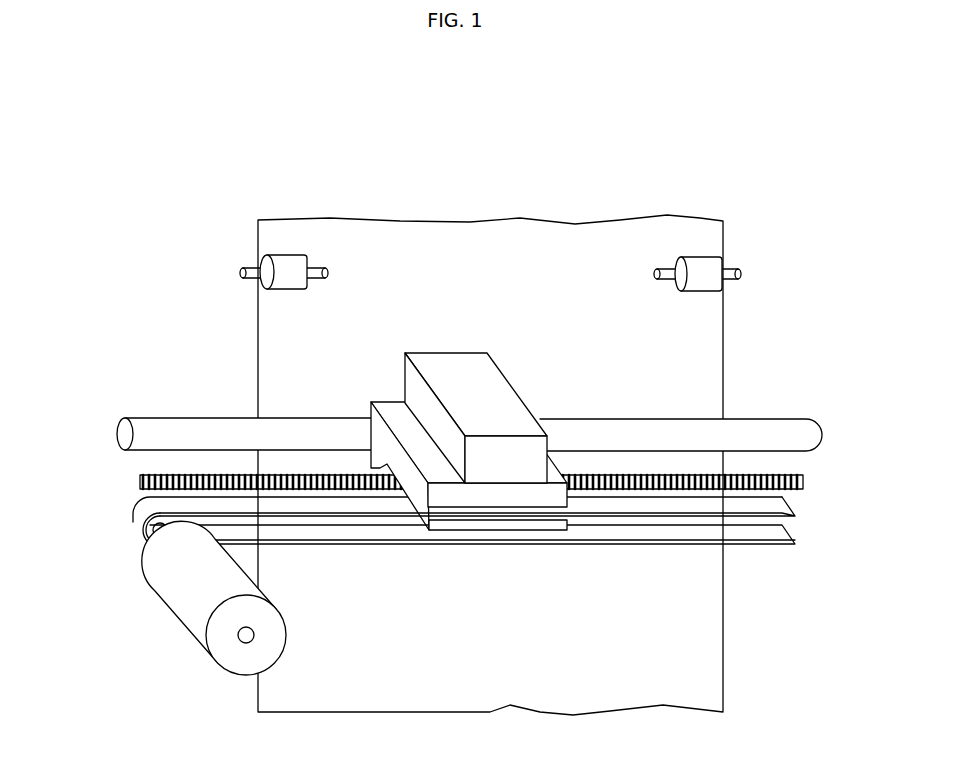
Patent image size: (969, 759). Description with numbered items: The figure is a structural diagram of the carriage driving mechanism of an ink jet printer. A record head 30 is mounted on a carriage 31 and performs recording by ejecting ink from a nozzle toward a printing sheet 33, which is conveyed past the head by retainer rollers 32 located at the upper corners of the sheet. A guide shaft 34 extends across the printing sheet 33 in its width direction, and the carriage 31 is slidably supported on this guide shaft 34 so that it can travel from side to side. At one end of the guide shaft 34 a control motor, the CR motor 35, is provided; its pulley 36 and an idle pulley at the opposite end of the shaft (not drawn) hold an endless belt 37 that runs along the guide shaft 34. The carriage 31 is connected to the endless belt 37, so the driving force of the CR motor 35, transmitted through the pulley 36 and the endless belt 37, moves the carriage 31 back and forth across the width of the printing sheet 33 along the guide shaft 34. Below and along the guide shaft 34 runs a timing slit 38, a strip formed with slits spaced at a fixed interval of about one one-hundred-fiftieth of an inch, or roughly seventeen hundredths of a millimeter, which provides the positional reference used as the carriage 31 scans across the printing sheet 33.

The record head 30 is at (453, 368).
The carriage 31 is at (388, 408).
The retainer rollers 32 is at (297, 265).
The printing sheet 33 is at (577, 253).
The guide shaft 34 is at (800, 432).
The control motor (CR motor) 35 is at (183, 600).
The pulley 36 is at (158, 532).
The endless belt 37 is at (765, 545).
The timing slit 38 is at (138, 486).